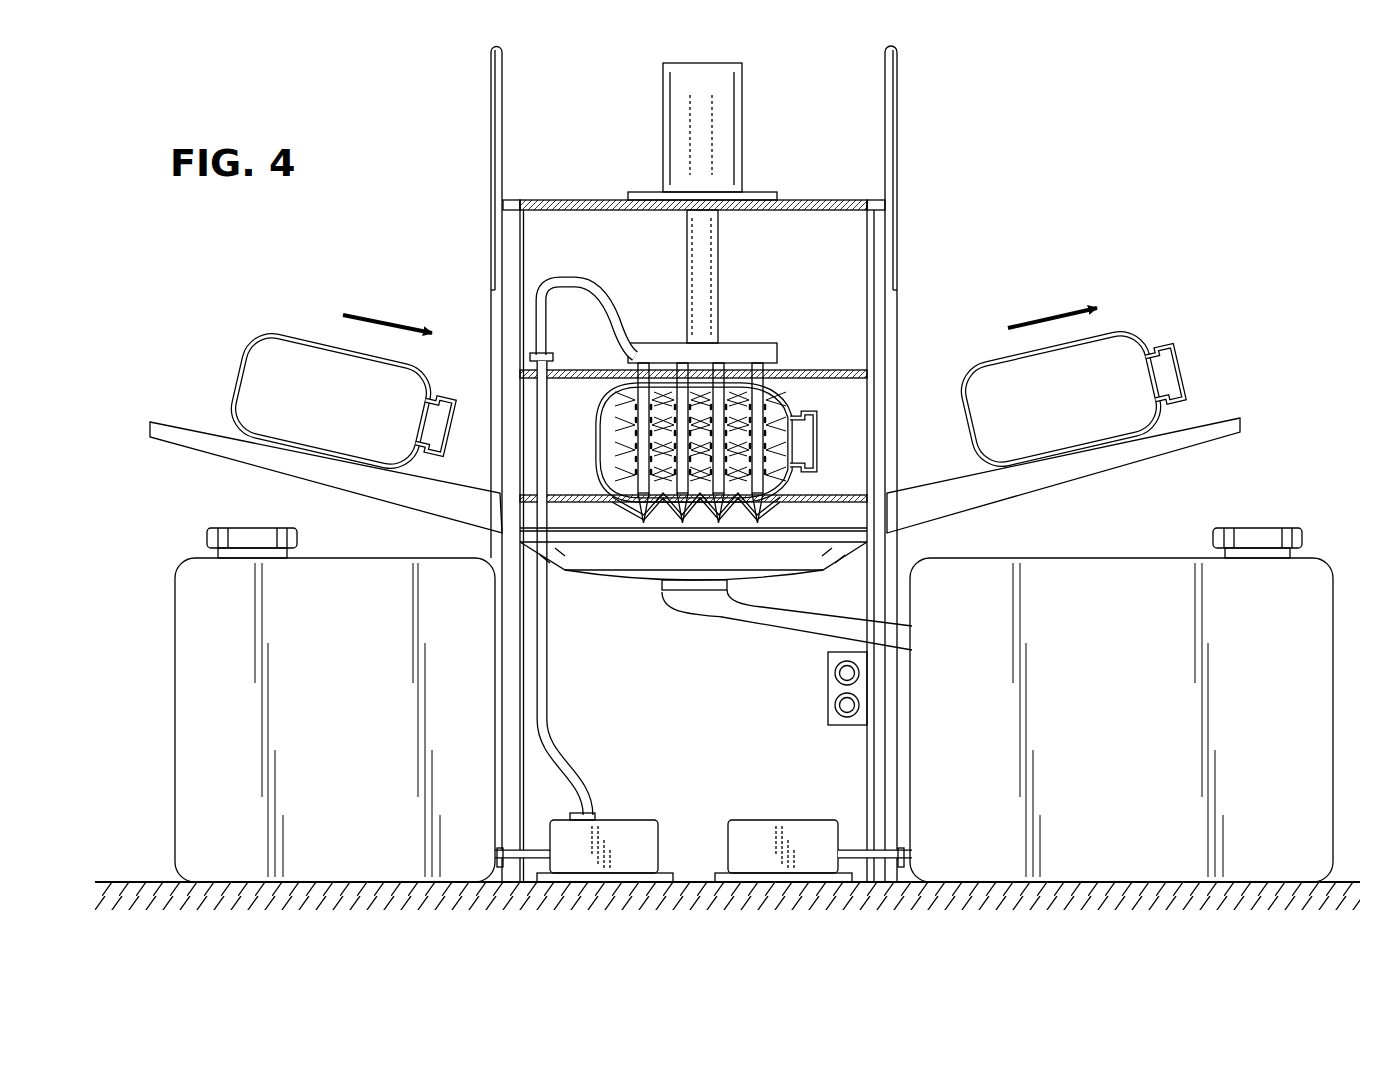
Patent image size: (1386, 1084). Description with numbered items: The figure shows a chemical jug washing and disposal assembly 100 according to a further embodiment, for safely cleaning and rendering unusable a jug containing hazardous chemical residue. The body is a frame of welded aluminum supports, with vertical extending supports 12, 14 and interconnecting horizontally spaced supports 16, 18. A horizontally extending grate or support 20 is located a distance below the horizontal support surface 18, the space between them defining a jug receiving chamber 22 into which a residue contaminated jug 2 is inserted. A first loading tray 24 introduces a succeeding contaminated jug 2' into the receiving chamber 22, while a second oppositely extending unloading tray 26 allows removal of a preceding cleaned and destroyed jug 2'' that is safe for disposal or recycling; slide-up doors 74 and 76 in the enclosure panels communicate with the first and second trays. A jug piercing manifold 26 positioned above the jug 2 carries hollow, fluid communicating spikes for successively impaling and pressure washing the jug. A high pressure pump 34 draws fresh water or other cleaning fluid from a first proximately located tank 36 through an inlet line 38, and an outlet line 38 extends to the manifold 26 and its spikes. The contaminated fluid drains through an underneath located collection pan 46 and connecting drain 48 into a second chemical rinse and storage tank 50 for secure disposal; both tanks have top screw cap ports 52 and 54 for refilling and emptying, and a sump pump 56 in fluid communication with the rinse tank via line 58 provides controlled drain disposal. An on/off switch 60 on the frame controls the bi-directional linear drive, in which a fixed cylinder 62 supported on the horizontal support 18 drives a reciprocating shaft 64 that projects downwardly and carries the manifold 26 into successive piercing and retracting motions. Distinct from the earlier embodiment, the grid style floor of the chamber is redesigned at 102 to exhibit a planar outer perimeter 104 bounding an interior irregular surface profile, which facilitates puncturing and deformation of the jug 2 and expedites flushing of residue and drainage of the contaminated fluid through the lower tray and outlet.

The chemical jug washing and disposal assembly 100 is at (998, 100).
The residue contaminated jug 2 is at (719, 439).
The succeeding contaminated jug 2' is at (326, 375).
The preceding cleaned/destroyed jug 2'' is at (1079, 371).
The vertical extending support 12 is at (512, 320).
The vertical extending support 14 is at (875, 258).
The horizontally spaced support 16 is at (578, 197).
The horizontal support surface 18 is at (820, 365).
The grate or support 20 is at (592, 520).
The jug receiving chamber 22 is at (560, 447).
The first loading tray 24 is at (380, 483).
The jug piercing manifold 26 is at (645, 343).
The high pressure pump 34 is at (580, 862).
The first tank 36 is at (335, 783).
The inlet line / outlet line 38 is at (528, 855).
The collection pan 46 is at (683, 568).
The drain 48 is at (752, 612).
The second chemical rinse and storage tank 50 is at (1095, 713).
The top screw cap port 52 is at (250, 527).
The top screw cap port 54 is at (1265, 527).
The sump pump 56 is at (765, 852).
The line 58 is at (897, 860).
The on/off switch 60 is at (828, 690).
The fixed cylinder 62 is at (663, 95).
The reciprocating shaft 64 is at (712, 235).
The slide-up door 74 is at (490, 100).
The slide-up door 76 is at (897, 140).
The redesigned grid style floor 102 is at (795, 504).
The planar outer perimeter 104 is at (855, 495).